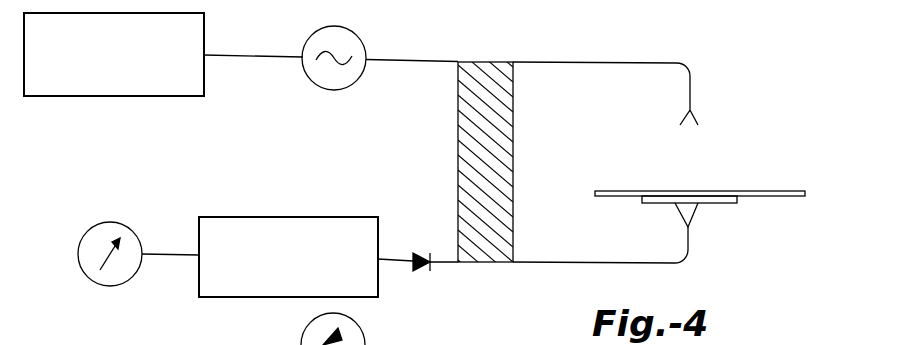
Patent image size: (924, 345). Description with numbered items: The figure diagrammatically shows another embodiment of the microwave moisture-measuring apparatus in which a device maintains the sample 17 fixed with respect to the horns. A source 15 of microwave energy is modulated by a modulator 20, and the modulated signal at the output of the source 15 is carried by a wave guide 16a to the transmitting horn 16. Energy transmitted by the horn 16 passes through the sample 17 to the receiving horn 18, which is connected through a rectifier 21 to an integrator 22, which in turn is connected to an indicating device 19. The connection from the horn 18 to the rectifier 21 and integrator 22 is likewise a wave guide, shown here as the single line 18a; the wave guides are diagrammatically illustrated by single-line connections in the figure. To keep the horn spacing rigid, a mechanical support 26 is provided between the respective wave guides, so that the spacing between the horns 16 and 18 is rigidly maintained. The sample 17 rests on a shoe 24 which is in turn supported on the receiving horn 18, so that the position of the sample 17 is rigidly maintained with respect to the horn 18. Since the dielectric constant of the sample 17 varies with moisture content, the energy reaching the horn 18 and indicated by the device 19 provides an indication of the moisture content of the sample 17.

The source of microwave energy 15 is at (305, 76).
The transmitting horn 16 is at (695, 117).
The wave guide 16a is at (563, 62).
The sample 17 is at (603, 190).
The receiving horn 18 is at (693, 221).
The conductor 18a is at (557, 262).
The indicating device 19 is at (122, 220).
The modulator 20 is at (98, 95).
The rectifier 21 is at (418, 265).
The integrator 22 is at (288, 217).
The dielectric layer 24 is at (638, 203).
The mechanical support 26 is at (459, 103).